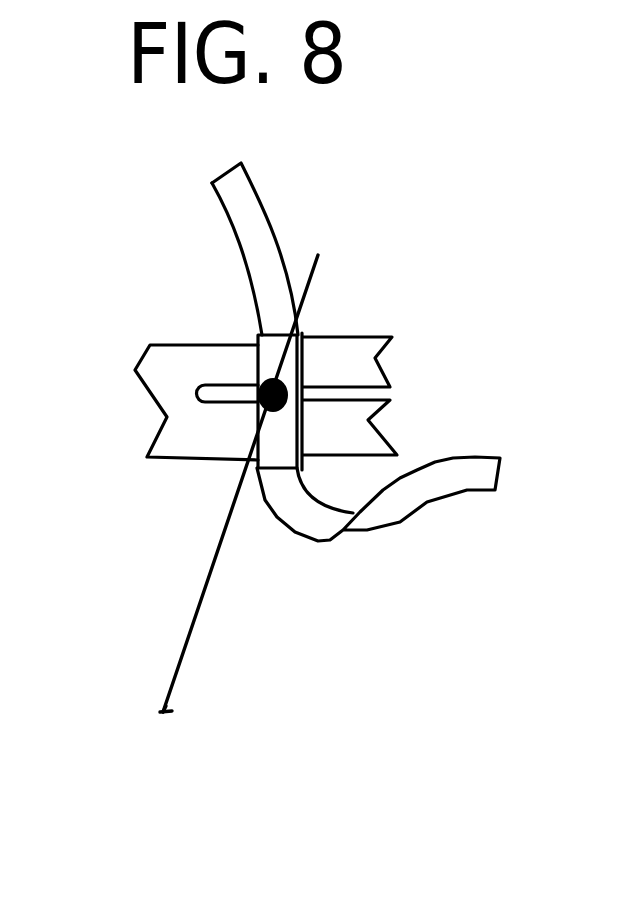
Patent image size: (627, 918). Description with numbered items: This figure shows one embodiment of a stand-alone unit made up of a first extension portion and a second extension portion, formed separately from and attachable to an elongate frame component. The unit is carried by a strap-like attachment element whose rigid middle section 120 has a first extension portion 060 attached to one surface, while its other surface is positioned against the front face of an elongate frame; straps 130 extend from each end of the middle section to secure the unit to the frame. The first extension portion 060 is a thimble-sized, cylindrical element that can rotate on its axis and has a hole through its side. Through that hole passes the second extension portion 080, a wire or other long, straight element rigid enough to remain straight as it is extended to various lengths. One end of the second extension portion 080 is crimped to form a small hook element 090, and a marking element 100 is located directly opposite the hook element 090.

The first extension portion 060 is at (256, 400).
The second extension portion 080 is at (343, 263).
The hook element 090 is at (182, 726).
The marking element 100 is at (143, 721).
The rigid middle section 120 is at (330, 356).
The straps 130 is at (392, 507).